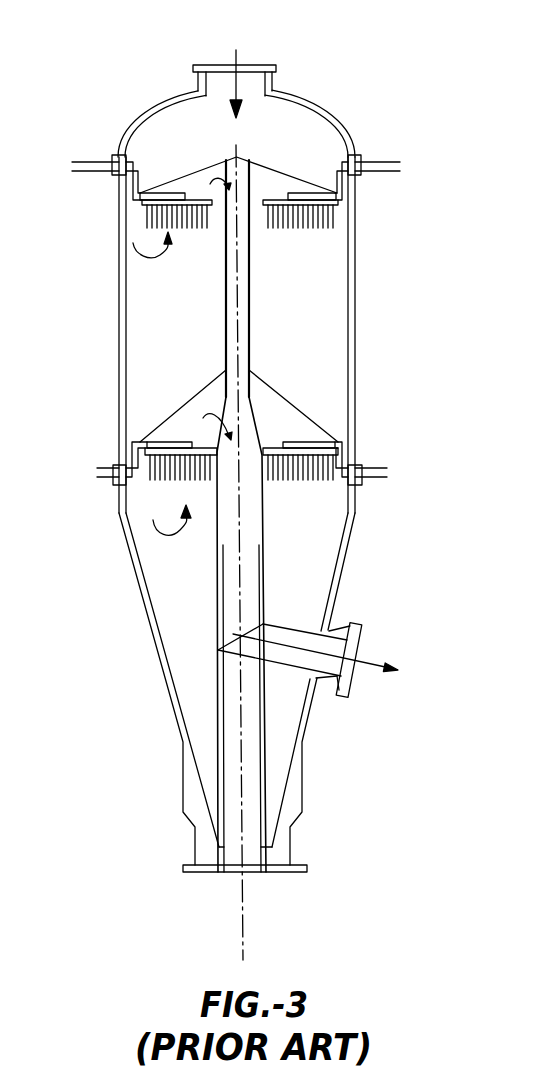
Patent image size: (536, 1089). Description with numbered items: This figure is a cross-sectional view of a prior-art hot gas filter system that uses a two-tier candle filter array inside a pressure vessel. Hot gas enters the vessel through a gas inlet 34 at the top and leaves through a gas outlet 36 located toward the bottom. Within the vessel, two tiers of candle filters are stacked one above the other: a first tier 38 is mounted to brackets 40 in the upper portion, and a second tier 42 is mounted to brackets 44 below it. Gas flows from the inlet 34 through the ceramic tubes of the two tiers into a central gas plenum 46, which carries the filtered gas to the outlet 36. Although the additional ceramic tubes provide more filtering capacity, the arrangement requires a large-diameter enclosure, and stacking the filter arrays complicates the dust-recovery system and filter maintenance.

The gas inlet 34 is at (220, 63).
The gas outlet 36 is at (367, 677).
The first tier 38 is at (142, 215).
The brackets 40 is at (138, 167).
The second tier 42 is at (160, 490).
The brackets 44 is at (132, 445).
The central gas plenum 46 is at (217, 590).